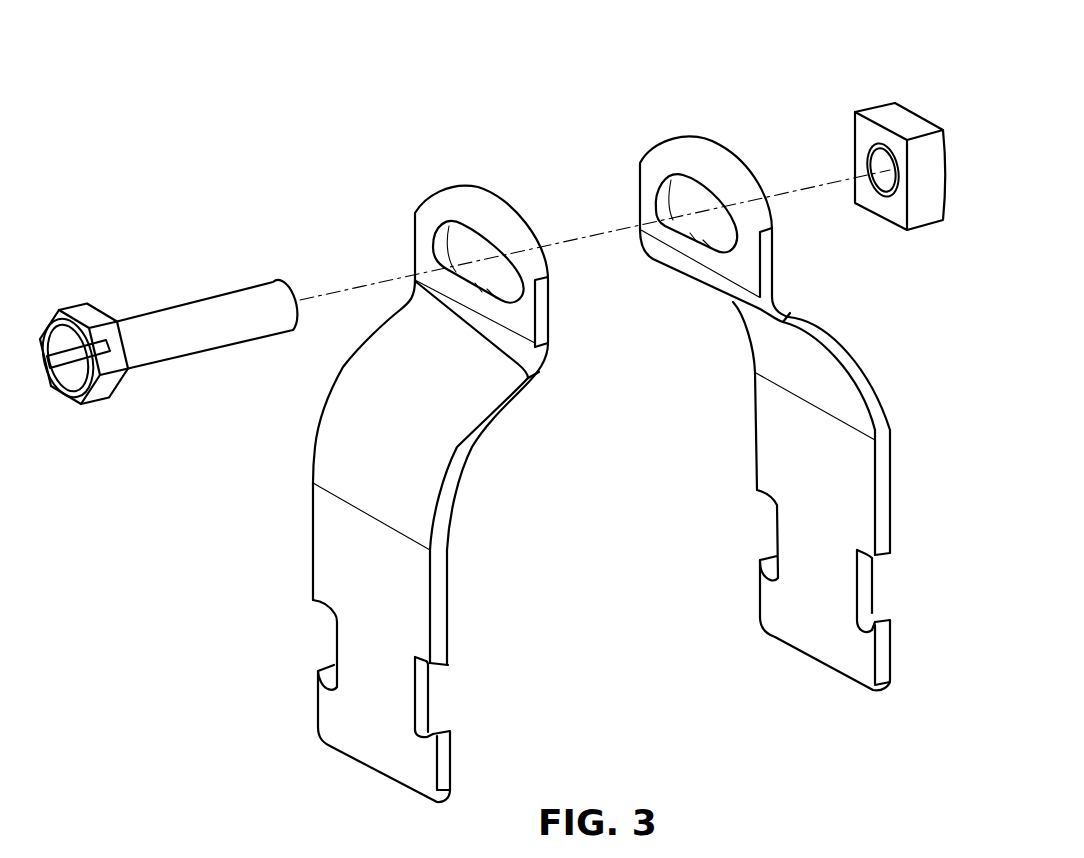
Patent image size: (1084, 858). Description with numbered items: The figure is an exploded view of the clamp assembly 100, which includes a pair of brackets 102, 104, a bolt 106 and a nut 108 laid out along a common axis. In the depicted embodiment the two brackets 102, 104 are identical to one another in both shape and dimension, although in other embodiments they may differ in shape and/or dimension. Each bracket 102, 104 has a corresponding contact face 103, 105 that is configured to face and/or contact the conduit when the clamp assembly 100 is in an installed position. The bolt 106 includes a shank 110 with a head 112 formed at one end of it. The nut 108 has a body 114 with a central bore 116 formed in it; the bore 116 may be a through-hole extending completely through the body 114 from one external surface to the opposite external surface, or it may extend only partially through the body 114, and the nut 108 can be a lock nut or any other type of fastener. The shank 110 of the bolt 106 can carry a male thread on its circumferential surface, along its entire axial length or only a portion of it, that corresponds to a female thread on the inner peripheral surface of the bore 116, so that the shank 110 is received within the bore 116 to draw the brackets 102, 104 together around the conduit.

The clamp assembly 100 is at (294, 78).
The bracket 102 is at (287, 556).
The contact face 103 is at (455, 482).
The bracket 104 is at (910, 515).
The contact face 105 is at (797, 360).
The bolt 106 is at (134, 275).
The nut 108 is at (836, 110).
The shank 110 is at (187, 335).
The head 112 is at (95, 393).
The body 114 is at (920, 207).
The central bore 116 is at (887, 180).